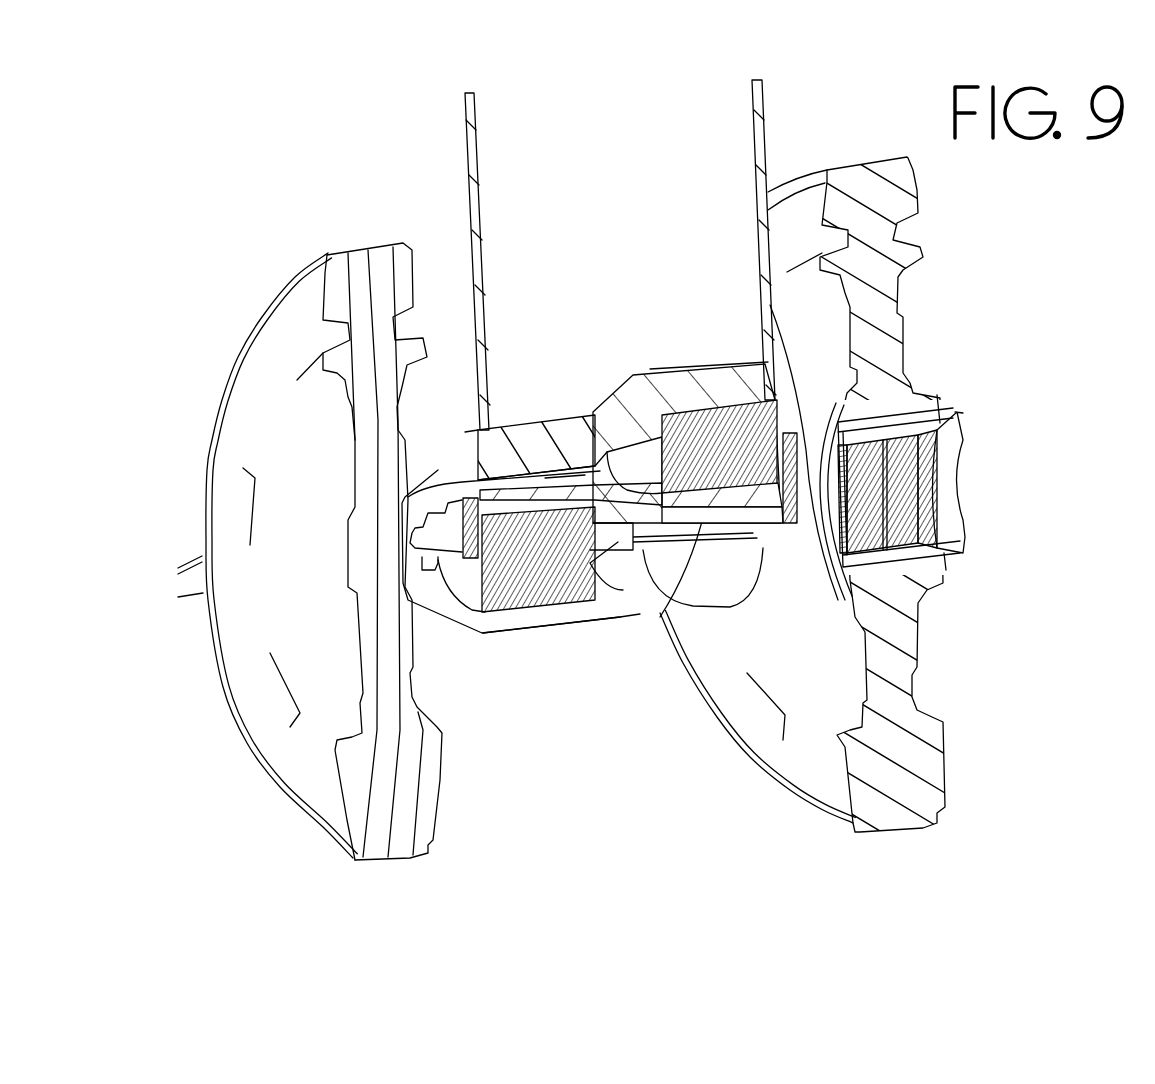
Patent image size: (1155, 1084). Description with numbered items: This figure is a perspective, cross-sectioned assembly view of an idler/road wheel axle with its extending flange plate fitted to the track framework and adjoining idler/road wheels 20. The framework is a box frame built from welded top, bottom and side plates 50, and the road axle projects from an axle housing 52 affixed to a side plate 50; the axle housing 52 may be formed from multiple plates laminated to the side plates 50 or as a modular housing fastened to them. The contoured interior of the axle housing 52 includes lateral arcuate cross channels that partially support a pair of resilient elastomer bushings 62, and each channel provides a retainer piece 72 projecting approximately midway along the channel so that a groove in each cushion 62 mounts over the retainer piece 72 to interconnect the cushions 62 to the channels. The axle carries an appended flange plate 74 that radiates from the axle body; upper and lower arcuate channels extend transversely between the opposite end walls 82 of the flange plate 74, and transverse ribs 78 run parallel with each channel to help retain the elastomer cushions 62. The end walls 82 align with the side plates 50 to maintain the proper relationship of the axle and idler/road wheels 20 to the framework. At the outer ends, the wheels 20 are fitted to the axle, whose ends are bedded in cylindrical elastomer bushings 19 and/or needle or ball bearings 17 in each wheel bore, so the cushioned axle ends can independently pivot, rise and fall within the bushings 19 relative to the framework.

The needle or ball bearings 17 is at (962, 435).
The cylindrical elastomer bushings 19 is at (912, 500).
The idler/road wheels 20 is at (318, 773).
The side plates 50 is at (753, 173).
The axle housings 52 is at (565, 630).
The resilient elastomer bushings 62 is at (717, 427).
The retainer piece 72 is at (630, 430).
The flange plate 74 is at (665, 555).
The transverse ribs 78 is at (573, 477).
The end walls 82 is at (465, 432).